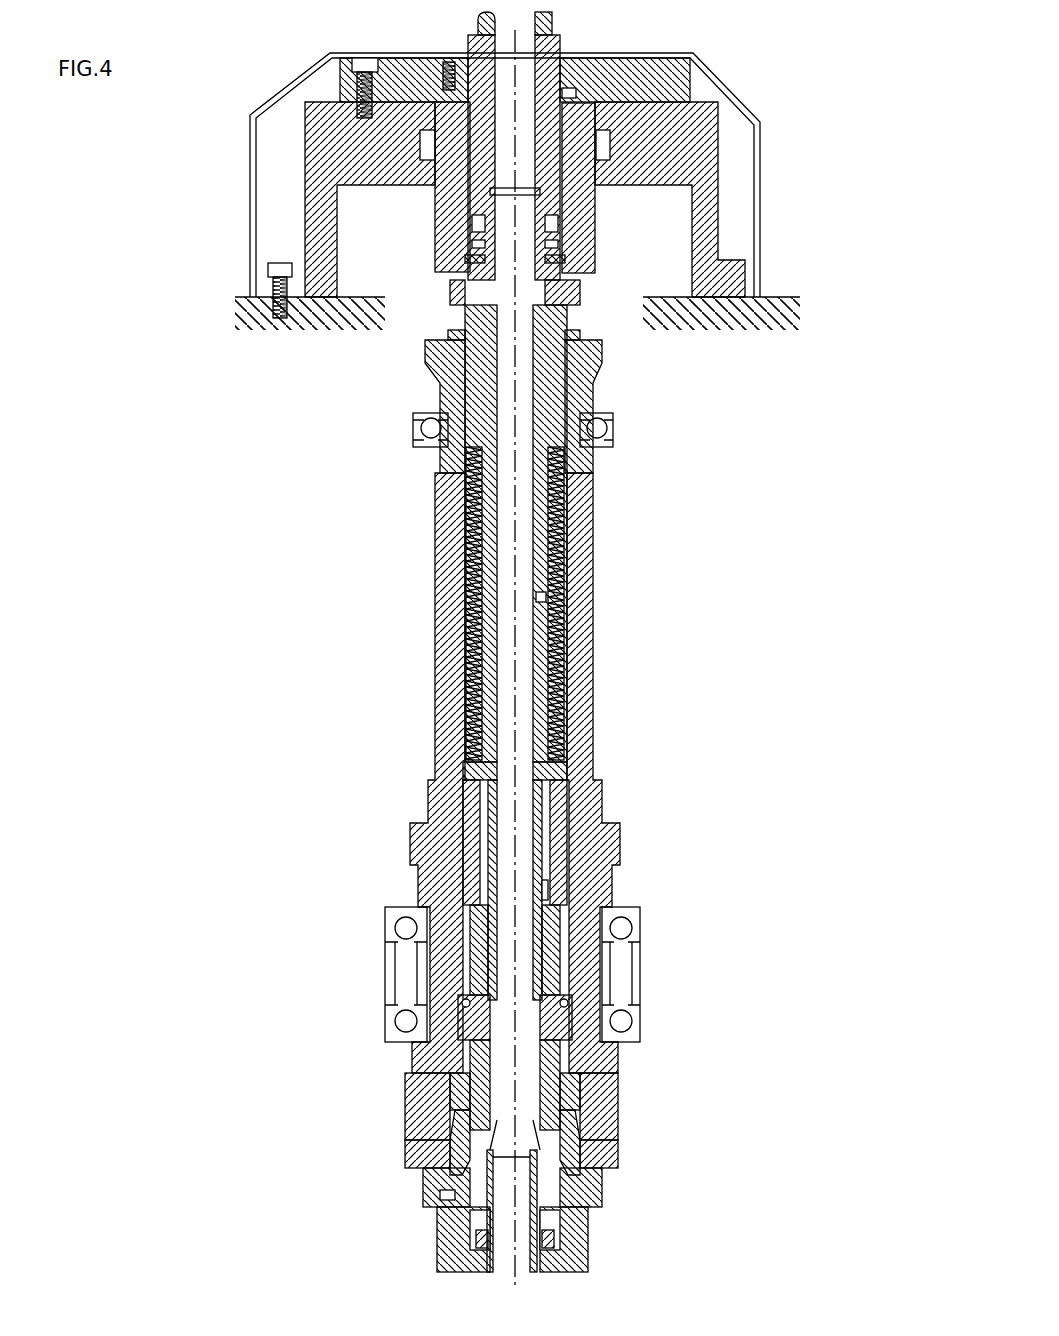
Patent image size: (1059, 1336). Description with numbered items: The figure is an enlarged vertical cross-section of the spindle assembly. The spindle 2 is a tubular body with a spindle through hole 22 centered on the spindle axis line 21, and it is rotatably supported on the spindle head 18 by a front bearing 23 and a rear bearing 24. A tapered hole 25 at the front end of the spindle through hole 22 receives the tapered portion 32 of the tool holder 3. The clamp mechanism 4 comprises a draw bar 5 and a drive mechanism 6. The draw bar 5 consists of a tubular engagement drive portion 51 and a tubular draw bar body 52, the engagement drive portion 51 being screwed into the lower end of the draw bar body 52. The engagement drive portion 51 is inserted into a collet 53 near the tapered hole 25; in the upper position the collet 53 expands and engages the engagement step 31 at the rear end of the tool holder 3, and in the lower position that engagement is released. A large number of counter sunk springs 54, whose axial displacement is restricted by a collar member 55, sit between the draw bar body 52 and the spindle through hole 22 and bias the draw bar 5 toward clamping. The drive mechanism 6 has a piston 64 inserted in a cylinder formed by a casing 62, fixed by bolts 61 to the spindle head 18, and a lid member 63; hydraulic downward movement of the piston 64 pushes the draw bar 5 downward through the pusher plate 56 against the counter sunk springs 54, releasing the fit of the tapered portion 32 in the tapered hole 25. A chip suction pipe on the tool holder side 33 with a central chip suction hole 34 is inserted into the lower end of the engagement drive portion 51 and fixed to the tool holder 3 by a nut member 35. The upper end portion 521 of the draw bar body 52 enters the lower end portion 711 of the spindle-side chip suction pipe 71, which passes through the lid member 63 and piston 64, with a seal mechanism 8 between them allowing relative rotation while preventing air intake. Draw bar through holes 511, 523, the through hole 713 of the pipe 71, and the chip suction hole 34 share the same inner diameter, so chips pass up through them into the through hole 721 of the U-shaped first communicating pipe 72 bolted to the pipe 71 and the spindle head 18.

The spindle 2 is at (447, 586).
The tool holder 3 is at (580, 1244).
The clamp mechanism 4 is at (604, 688).
The draw bar 5 is at (580, 320).
The drive mechanism 6 is at (730, 56).
The seal mechanism 8 is at (578, 238).
The spindle head 18 is at (367, 312).
The spindle axis line 21 is at (517, 555).
The spindle through hole 22 is at (562, 402).
The front bearing 23 is at (634, 932).
The rear bearing 24 is at (613, 430).
The tapered hole 25 is at (600, 1156).
The engagement step 31 is at (582, 1136).
The tapered portion 32 is at (432, 1148).
The chip suction pipe on the tool holder side 33 is at (540, 1199).
The chip suction hole 34 is at (460, 1186).
The nut member 35 is at (548, 1226).
The engagement drive portion 51 is at (560, 1070).
The draw bar body 52 is at (548, 782).
The collet 53 is at (576, 1101).
The counter sunk springs 54 is at (566, 642).
The collar member 55 is at (560, 812).
The pusher plate 56 is at (565, 292).
The bolts 61 is at (284, 266).
The casing 62 is at (330, 236).
The lid member 63 is at (670, 58).
The piston 64 is at (440, 208).
The chip suction pipe on the spindle side 71 is at (578, 65).
The first communicating pipe 72 is at (468, 44).
The lower end portion 711 is at (585, 210).
The through hole 713 is at (576, 93).
The through hole 721 is at (482, 16).
The draw bar through hole 511 is at (548, 892).
The upper end portion 521 is at (580, 262).
The draw bar through hole 523 is at (546, 598).